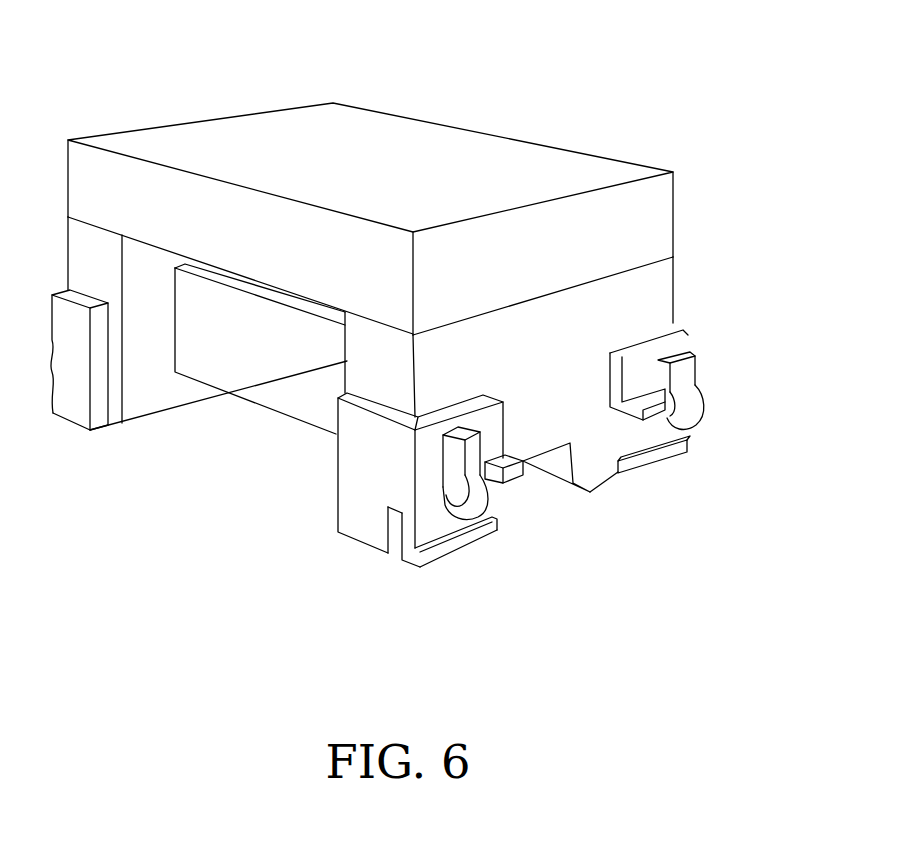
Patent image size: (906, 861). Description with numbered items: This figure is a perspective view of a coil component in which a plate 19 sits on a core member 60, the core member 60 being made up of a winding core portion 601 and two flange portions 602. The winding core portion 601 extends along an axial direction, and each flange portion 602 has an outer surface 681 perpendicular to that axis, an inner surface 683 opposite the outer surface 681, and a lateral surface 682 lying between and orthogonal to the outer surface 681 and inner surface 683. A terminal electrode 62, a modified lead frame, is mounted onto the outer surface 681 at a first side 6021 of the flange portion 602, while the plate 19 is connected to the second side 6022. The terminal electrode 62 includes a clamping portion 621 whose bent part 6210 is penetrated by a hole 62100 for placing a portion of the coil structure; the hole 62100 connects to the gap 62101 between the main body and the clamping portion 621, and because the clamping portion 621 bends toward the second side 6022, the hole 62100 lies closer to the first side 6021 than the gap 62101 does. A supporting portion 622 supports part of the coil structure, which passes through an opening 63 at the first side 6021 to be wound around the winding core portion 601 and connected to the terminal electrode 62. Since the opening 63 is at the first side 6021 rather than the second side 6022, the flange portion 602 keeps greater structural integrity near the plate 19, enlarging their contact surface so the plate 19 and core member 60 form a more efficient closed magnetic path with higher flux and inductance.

The plate 19 is at (555, 164).
The core member 60 is at (213, 63).
The winding core portion 601 is at (205, 312).
The flange portion 602 is at (155, 300).
The first side 6021 is at (653, 444).
The second side 6022 is at (642, 289).
The terminal electrode 62 is at (399, 520).
The clamping portion 621 is at (477, 533).
The supporting portion 622 is at (521, 486).
The bent part 6210 is at (445, 525).
The hole 62100 is at (427, 497).
The gap 62101 is at (427, 457).
The opening 63 is at (542, 478).
The outer surface 681 is at (483, 345).
The lateral surface 682 is at (368, 353).
The inner surface 683 is at (148, 355).